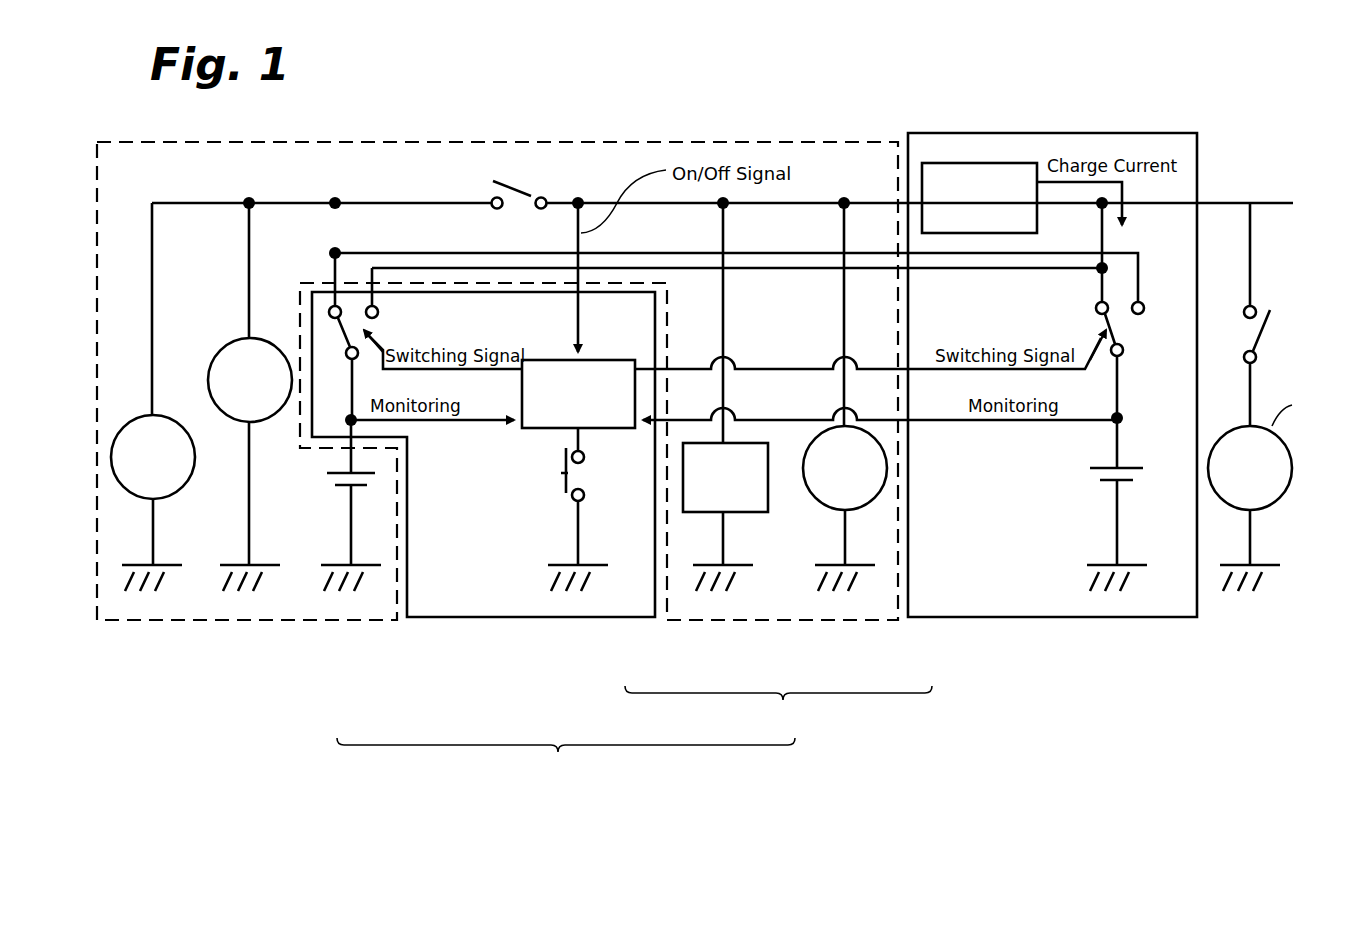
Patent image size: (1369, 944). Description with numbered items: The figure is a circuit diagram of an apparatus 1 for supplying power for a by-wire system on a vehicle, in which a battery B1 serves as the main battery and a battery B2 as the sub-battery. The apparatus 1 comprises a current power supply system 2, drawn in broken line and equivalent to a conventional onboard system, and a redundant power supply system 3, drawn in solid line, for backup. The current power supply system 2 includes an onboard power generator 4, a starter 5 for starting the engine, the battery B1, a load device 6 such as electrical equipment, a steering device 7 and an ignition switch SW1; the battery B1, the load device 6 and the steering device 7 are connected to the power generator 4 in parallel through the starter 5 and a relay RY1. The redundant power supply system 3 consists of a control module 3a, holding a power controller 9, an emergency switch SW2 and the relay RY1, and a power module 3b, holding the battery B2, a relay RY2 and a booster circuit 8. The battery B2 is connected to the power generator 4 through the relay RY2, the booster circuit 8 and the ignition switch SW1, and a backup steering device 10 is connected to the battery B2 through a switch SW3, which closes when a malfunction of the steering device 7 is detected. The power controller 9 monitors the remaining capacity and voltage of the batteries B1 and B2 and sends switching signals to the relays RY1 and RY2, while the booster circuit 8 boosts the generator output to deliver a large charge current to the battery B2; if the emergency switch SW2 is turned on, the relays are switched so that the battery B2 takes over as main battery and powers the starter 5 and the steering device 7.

The apparatus for supplying power 1 is at (566, 763).
The current power supply system 2 is at (337, 620).
The redundant power supply system 3 is at (778, 711).
The control module 3a is at (625, 618).
The power module 3b is at (943, 618).
The power generator 4 is at (148, 414).
The starter 5 is at (238, 346).
The load device 6 is at (736, 513).
The steering device 7 is at (838, 512).
The booster circuit 8 is at (983, 163).
The power controller 9 is at (600, 360).
The backup steering device 10 is at (1268, 507).
The ignition switch SW1 is at (521, 186).
The emergency switch SW2 is at (564, 486).
The switch SW3 is at (1268, 340).
The relay RY1 is at (370, 331).
The relay RY2 is at (1122, 332).
The battery B1 is at (336, 479).
The battery B2 is at (1098, 476).